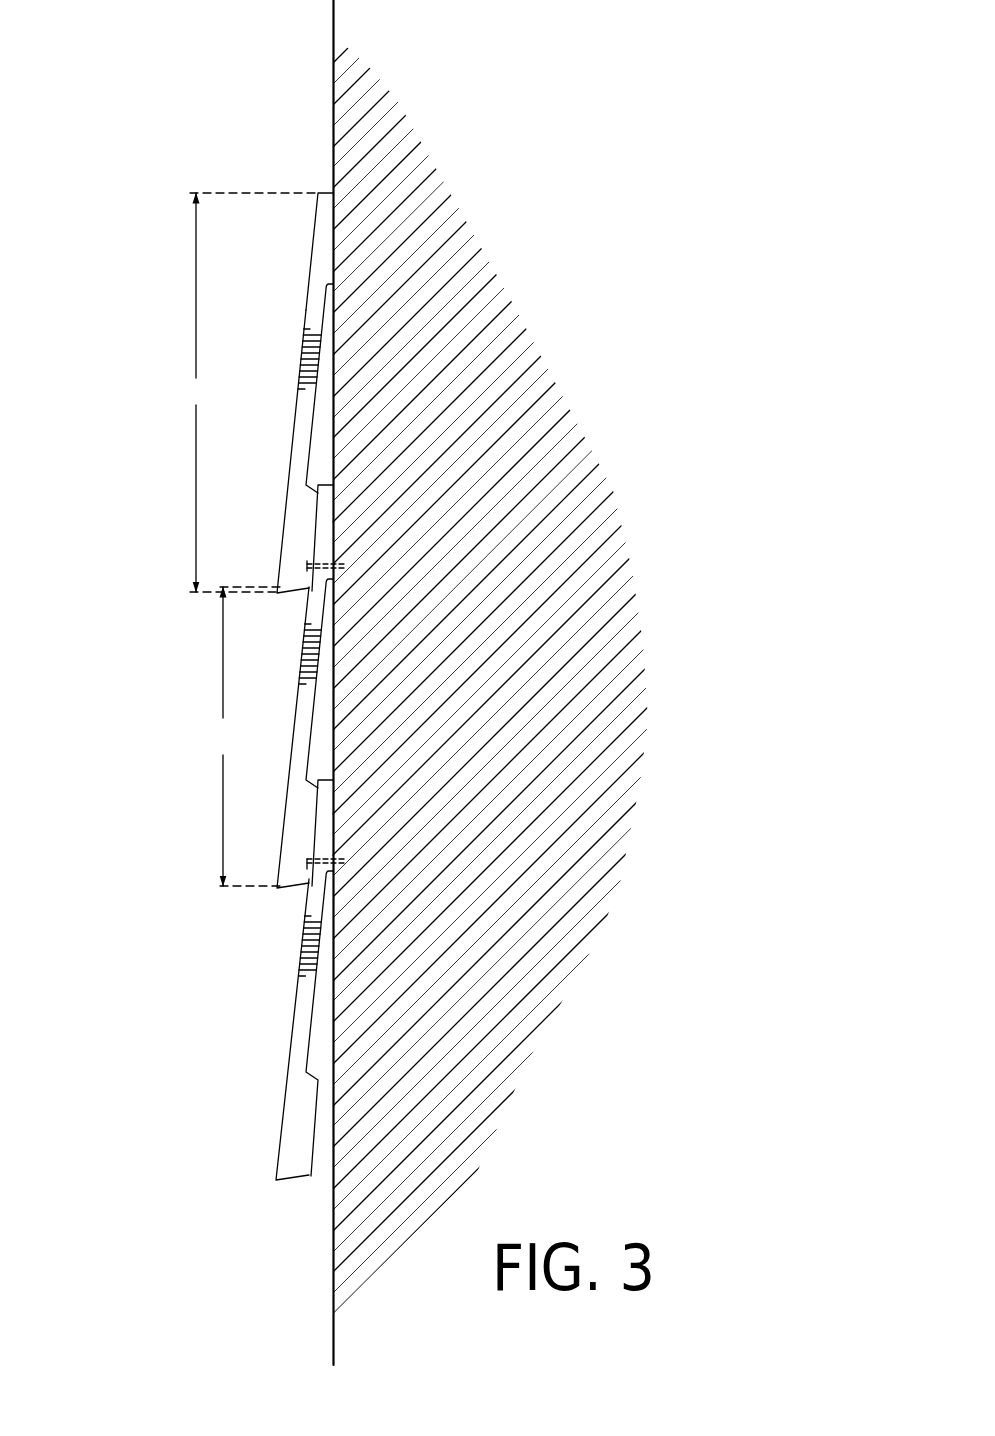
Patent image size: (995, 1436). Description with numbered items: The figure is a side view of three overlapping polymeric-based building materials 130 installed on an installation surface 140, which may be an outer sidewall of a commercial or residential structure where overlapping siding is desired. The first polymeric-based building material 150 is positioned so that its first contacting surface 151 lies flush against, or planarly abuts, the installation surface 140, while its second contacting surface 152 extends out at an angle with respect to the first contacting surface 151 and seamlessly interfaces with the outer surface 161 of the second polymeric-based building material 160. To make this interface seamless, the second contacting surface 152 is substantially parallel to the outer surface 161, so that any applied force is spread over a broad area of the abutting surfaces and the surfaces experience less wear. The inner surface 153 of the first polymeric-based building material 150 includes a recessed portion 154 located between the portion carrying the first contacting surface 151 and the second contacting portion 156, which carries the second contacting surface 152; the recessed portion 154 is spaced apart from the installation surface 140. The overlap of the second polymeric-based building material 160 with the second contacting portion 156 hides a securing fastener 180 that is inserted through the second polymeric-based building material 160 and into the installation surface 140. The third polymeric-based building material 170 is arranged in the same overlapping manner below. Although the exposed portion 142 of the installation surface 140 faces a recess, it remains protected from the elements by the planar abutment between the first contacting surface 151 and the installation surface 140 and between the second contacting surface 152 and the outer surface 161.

The polymeric-based building materials 130 is at (94, 585).
The installation surface 140 is at (334, 20).
The exposed portion of the installation surface 142 is at (335, 388).
The first polymeric-based building material 150 is at (265, 304).
The first contacting surface 151 is at (334, 242).
The second contacting surface 152 is at (312, 527).
The inner surface 153 is at (322, 326).
The recessed portion 154 is at (332, 441).
The second contacting portion 156 is at (298, 513).
The second polymeric-based building material 160 is at (277, 668).
The outer surface 161 is at (290, 743).
The third polymeric-based building material 170 is at (255, 995).
The securing fastener 180 is at (339, 568).